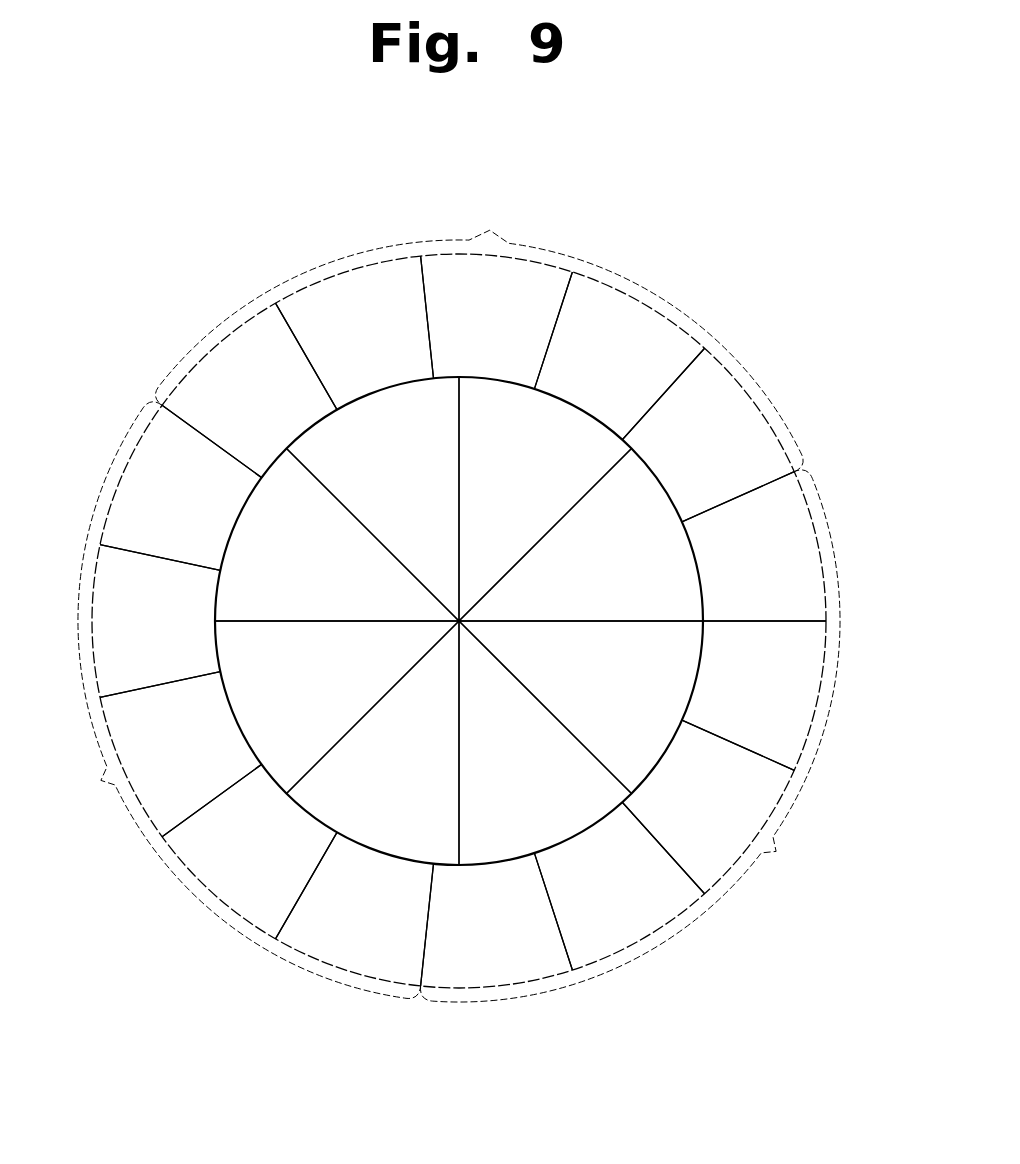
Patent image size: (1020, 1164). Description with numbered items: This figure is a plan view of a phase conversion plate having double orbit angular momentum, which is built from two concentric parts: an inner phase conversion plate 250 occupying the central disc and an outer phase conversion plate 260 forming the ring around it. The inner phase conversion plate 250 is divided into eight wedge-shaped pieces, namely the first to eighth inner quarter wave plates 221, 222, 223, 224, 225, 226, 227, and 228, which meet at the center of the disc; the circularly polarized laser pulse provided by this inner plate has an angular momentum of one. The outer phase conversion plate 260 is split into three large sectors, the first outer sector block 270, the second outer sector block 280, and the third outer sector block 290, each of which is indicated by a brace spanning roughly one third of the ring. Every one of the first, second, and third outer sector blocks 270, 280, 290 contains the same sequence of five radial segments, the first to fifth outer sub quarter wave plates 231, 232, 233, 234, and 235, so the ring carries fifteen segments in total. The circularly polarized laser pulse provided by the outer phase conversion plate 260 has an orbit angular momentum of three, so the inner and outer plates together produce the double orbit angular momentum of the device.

The first inner quarter wave plate 221 is at (578, 579).
The second inner quarter wave plate 222 is at (578, 697).
The third inner quarter wave plate 223 is at (494, 781).
The fourth inner quarter wave plate 224 is at (376, 781).
The fifth inner quarter wave plate 225 is at (292, 697).
The sixth inner quarter wave plate 226 is at (292, 579).
The seventh inner quarter wave plate 227 is at (376, 495).
The eighth inner quarter wave plate 228 is at (494, 495).
The first outer sub quarter wave plate 231 is at (733, 575).
The second outer sub quarter wave plate 232 is at (341, 348).
The third outer sub quarter wave plate 233 is at (467, 335).
The fourth outer sub quarter wave plate 234 is at (587, 374).
The fifth outer sub quarter wave plate 235 is at (682, 459).
The inner phase conversion plate 250 is at (666, 545).
The outer phase conversion plate 260 is at (660, 328).
The first outer sector block 270 is at (235, 700).
The second outer sector block 280 is at (479, 335).
The third outer sector block 290 is at (630, 736).